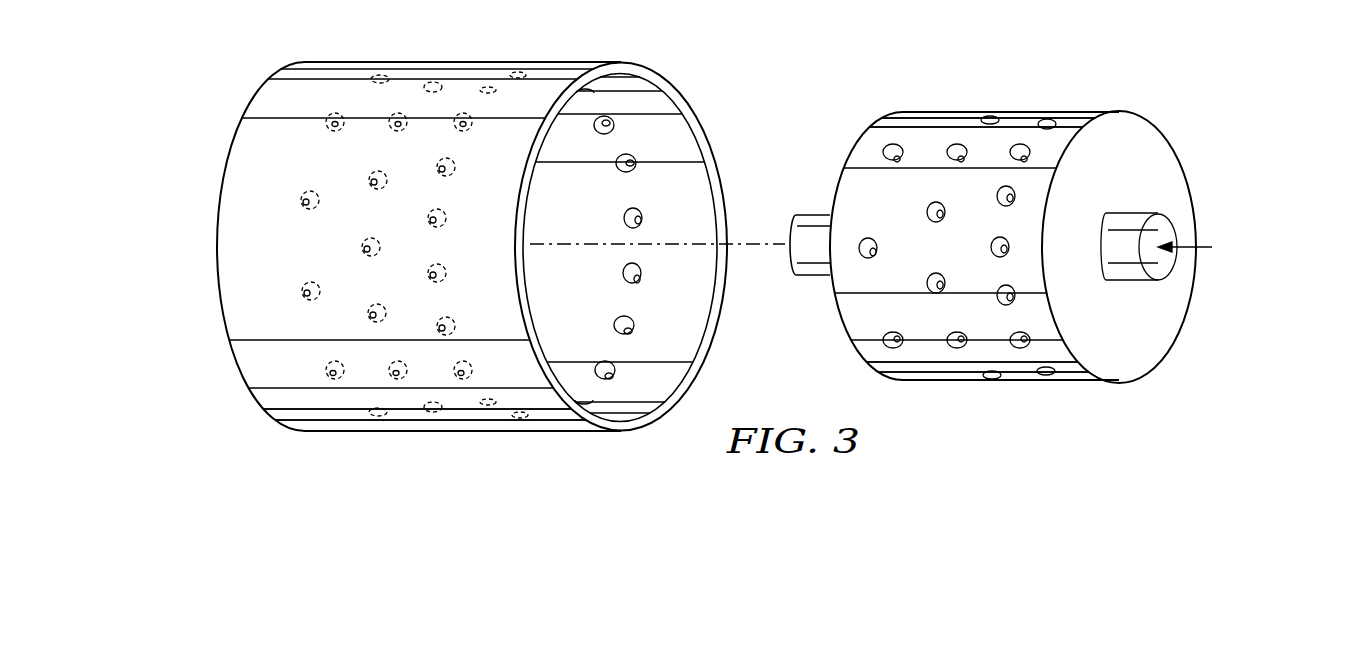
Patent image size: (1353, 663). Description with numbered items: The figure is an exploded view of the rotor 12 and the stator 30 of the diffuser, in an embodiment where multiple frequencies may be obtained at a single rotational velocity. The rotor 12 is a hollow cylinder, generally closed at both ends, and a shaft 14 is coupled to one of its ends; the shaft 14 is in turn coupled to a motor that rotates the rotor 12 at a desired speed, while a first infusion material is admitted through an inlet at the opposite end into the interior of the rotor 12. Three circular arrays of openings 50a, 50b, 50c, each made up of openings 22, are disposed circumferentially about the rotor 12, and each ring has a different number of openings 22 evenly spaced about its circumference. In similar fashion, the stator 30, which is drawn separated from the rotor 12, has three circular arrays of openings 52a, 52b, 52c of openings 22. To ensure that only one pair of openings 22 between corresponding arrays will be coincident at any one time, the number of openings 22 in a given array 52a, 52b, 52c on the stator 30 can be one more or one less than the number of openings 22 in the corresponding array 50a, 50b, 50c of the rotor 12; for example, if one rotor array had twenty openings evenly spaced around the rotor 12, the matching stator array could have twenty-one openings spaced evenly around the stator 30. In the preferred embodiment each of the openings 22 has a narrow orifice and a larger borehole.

The rotor 12 is at (1157, 147).
The shaft 14 is at (818, 213).
The openings 22 is at (432, 80).
The stator 30 is at (352, 62).
The array of openings 50a is at (950, 395).
The array of openings 50b is at (997, 103).
The array of openings 50c is at (1067, 395).
The array of openings 52a is at (381, 436).
The array of openings 52b is at (440, 436).
The array of openings 52c is at (525, 436).